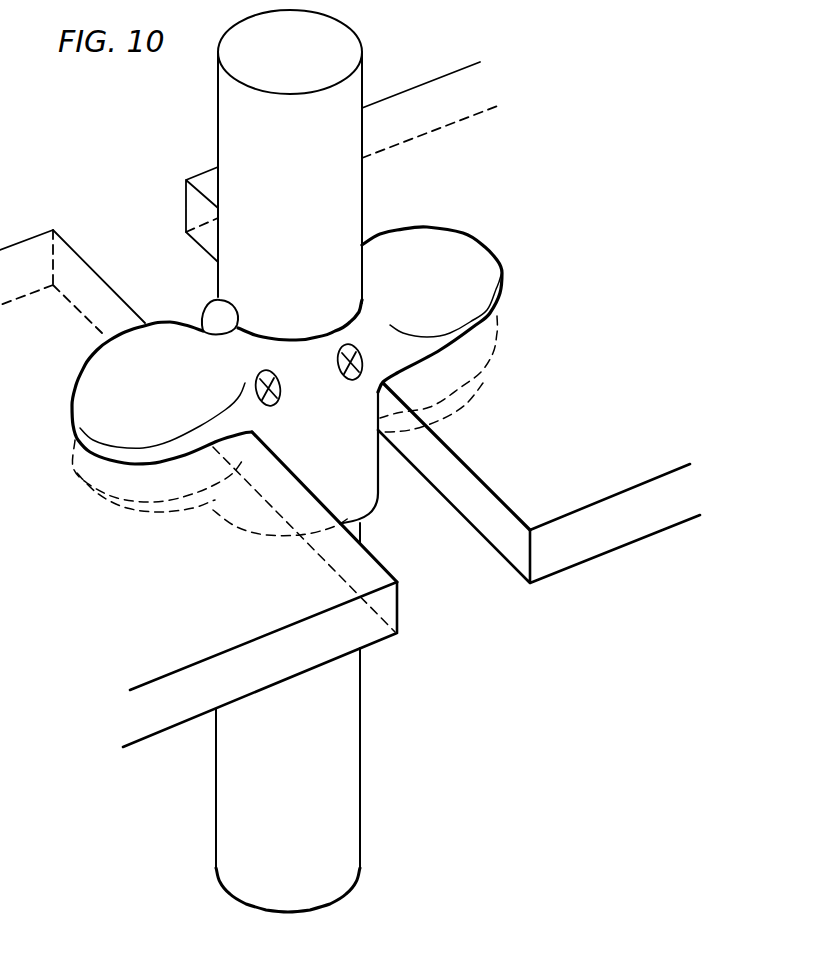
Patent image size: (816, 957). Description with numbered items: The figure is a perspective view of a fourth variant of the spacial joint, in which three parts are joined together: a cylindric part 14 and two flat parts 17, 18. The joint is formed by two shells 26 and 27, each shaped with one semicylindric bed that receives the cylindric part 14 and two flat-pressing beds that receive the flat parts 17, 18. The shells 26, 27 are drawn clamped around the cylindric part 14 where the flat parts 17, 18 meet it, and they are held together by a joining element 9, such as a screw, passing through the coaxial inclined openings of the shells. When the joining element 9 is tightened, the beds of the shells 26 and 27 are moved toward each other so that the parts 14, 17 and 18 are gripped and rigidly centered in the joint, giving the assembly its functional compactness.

The joining element 9 is at (261, 382).
The cylindric part 14 is at (347, 101).
The flat part 17 is at (137, 668).
The flat part 18 is at (587, 497).
The shell 26 is at (212, 312).
The shell 27 is at (488, 277).